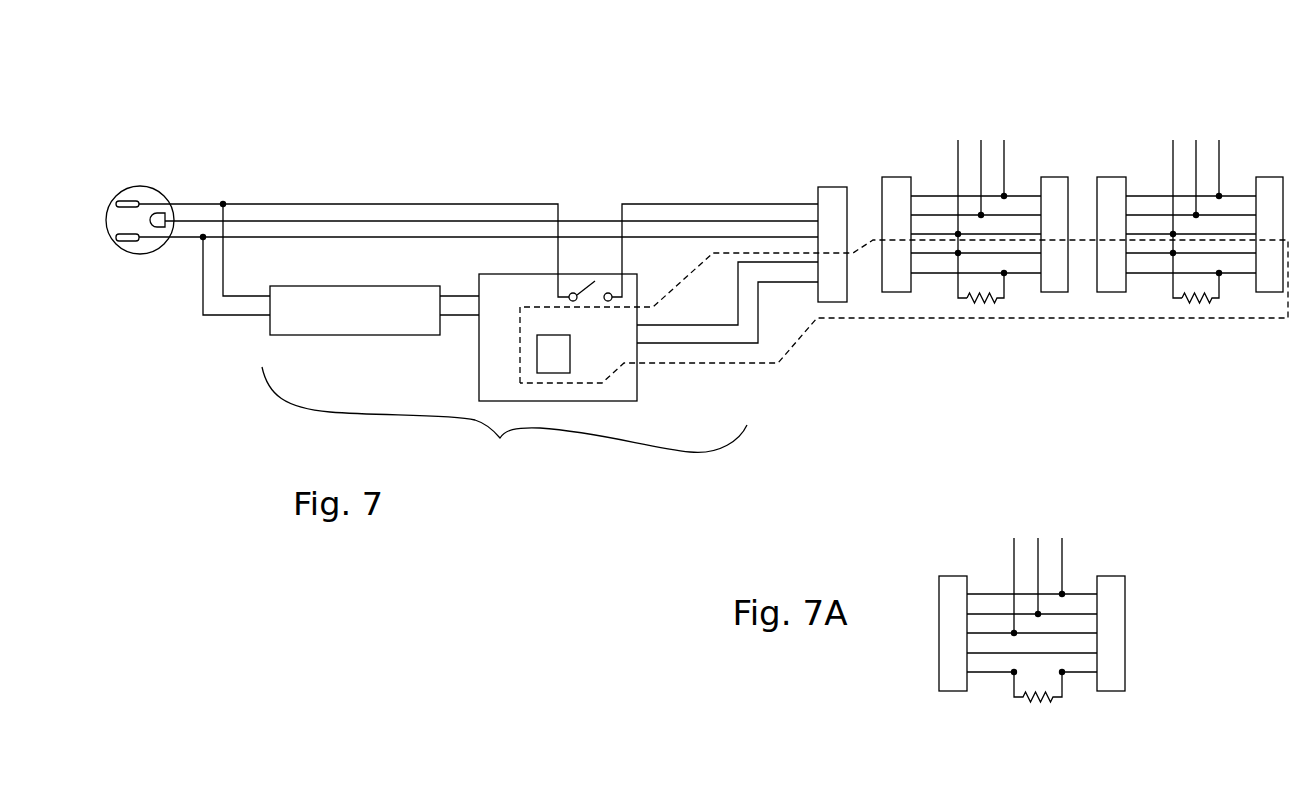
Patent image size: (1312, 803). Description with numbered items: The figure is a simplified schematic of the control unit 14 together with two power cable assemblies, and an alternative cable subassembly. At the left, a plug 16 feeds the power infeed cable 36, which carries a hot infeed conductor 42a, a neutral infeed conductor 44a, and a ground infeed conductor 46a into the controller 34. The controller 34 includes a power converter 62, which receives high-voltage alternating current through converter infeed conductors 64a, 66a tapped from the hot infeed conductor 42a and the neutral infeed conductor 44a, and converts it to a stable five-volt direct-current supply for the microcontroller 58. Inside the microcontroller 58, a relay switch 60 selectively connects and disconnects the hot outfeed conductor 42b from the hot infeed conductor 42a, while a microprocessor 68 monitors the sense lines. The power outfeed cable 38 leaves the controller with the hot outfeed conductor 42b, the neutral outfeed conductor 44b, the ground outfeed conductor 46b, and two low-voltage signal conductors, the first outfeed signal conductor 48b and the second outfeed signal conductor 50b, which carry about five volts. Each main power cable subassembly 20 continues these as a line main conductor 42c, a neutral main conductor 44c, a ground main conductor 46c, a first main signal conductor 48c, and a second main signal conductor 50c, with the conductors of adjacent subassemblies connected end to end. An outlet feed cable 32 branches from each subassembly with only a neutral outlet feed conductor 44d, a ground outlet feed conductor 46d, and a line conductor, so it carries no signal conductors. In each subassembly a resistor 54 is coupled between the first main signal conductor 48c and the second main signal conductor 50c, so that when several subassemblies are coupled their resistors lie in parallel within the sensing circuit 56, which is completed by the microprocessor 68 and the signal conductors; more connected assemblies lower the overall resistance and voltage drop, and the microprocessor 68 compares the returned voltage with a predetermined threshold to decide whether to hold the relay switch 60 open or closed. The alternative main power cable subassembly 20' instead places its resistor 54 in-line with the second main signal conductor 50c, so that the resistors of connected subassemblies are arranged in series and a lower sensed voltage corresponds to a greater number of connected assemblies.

In FIG. 7, the control unit 14 is at (485, 100).
In FIG. 7, the power plug 16 is at (141, 186).
In FIG. 7, the main power cable subassembly 20 is at (1082, 303).
In FIG. 7A, the alternative main power cable subassembly 20' is at (1082, 597).
In FIG. 7, the outlet feed cable 32 is at (1035, 132).
In FIG. 7A, the outlet feed cable 32 is at (1110, 523).
In FIG. 7, the controller 34 is at (504, 418).
In FIG. 7, the power infeed cable 36 is at (182, 313).
In FIG. 7, the power outfeed cable 38 is at (762, 167).
In FIG. 7, the hot infeed conductor 42a is at (180, 204).
In FIG. 7, the hot outfeed conductor 42b is at (620, 295).
In FIG. 7, the line main conductor 42c is at (922, 195).
In FIG. 7, the neutral infeed conductor 44a is at (182, 238).
In FIG. 7, the neutral outfeed conductor 44b is at (688, 238).
In FIG. 7, the neutral main conductor 44c is at (947, 232).
In FIG. 7, the neutral outlet feed conductor 44d is at (957, 157).
In FIG. 7A, the neutral outlet feed conductor 44d is at (1014, 555).
In FIG. 7, the ground infeed conductor 46a is at (200, 222).
In FIG. 7, the ground outfeed conductor 46b is at (692, 221).
In FIG. 7, the ground main conductor 46c is at (933, 215).
In FIG. 7, the ground outlet feed conductor 46d is at (982, 177).
In FIG. 7A, the ground outlet feed conductor 46d is at (1038, 573).
In FIG. 7, the first outfeed signal conductor 48b is at (678, 326).
In FIG. 7, the first main signal conductor 48c is at (938, 253).
In FIG. 7A, the first main signal conductor 48c is at (993, 653).
In FIG. 7, the second outfeed signal conductor 50b is at (710, 343).
In FIG. 7, the second main signal conductor 50c is at (947, 273).
In FIG. 7A, the second main signal conductor 50c is at (1005, 673).
In FIG. 7, the resistor 54 is at (980, 318).
In FIG. 7A, the resistor 54 is at (1045, 717).
In FIG. 7, the sensing circuit 56 is at (798, 340).
In FIG. 7, the microcontroller 58 is at (479, 360).
In FIG. 7, the relay switch 60 is at (547, 297).
In FIG. 7, the power converter 62 is at (338, 336).
In FIG. 7, the converter infeed conductor 64a is at (233, 293).
In FIG. 7, the converter infeed conductor 66a is at (223, 317).
In FIG. 7, the microprocessor 68 is at (544, 366).